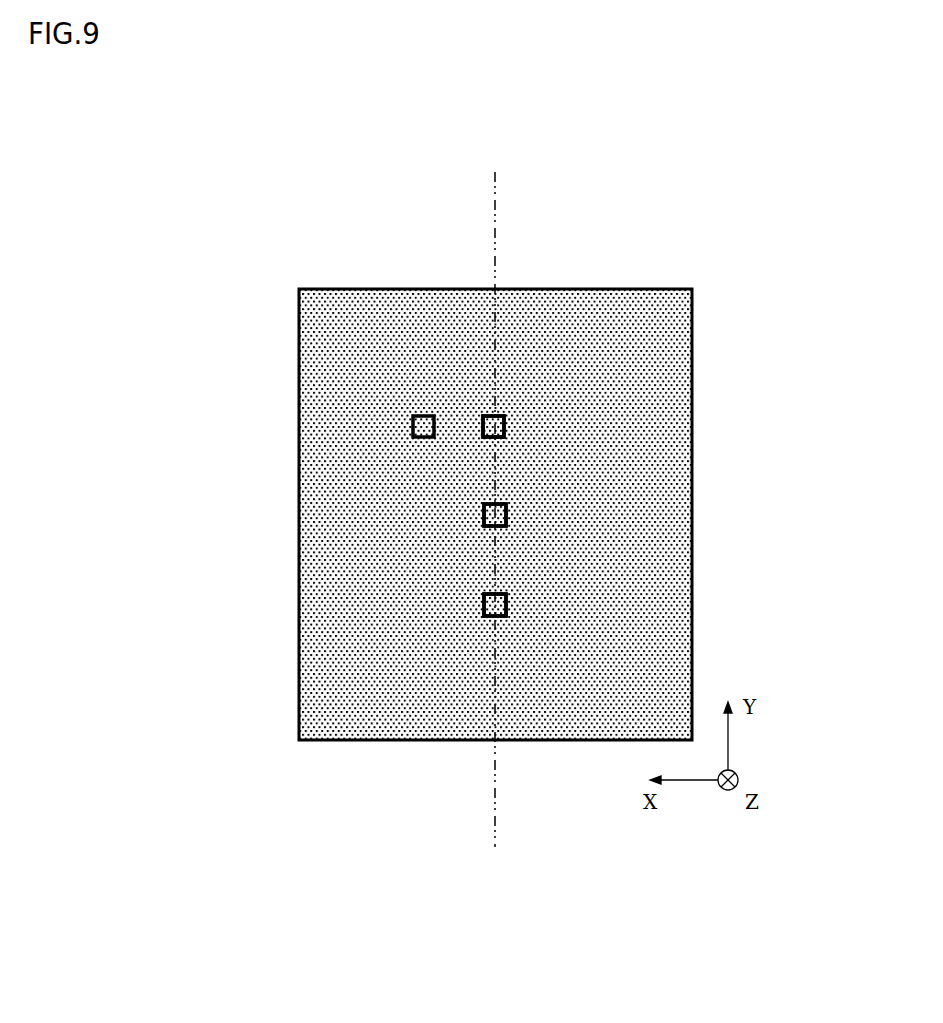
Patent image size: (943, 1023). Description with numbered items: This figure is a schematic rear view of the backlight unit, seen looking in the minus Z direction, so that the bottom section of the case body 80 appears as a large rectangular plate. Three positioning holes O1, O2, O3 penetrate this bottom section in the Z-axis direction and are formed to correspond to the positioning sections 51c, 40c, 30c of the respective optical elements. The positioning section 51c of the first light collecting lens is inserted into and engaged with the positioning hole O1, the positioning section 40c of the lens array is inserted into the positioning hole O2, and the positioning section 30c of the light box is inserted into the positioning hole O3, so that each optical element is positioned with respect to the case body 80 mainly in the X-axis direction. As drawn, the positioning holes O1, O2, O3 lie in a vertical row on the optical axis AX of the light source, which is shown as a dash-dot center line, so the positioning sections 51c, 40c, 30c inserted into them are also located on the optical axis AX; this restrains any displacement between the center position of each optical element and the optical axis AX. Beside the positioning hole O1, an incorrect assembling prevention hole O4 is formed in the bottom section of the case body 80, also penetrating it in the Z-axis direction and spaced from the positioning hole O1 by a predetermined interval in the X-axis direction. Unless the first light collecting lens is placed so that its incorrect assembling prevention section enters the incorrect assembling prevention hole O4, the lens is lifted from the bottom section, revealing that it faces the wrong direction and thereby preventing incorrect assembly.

The case body 80 is at (670, 289).
The optical axis AX is at (496, 216).
The positioning section 51c is at (484, 422).
The positioning hole O1 is at (504, 440).
The positioning hole O2 is at (505, 530).
The positioning hole O3 is at (505, 619).
The incorrect assembling prevention hole O4 is at (419, 438).
The positioning section 40c is at (485, 518).
The positioning section 30c is at (485, 610).